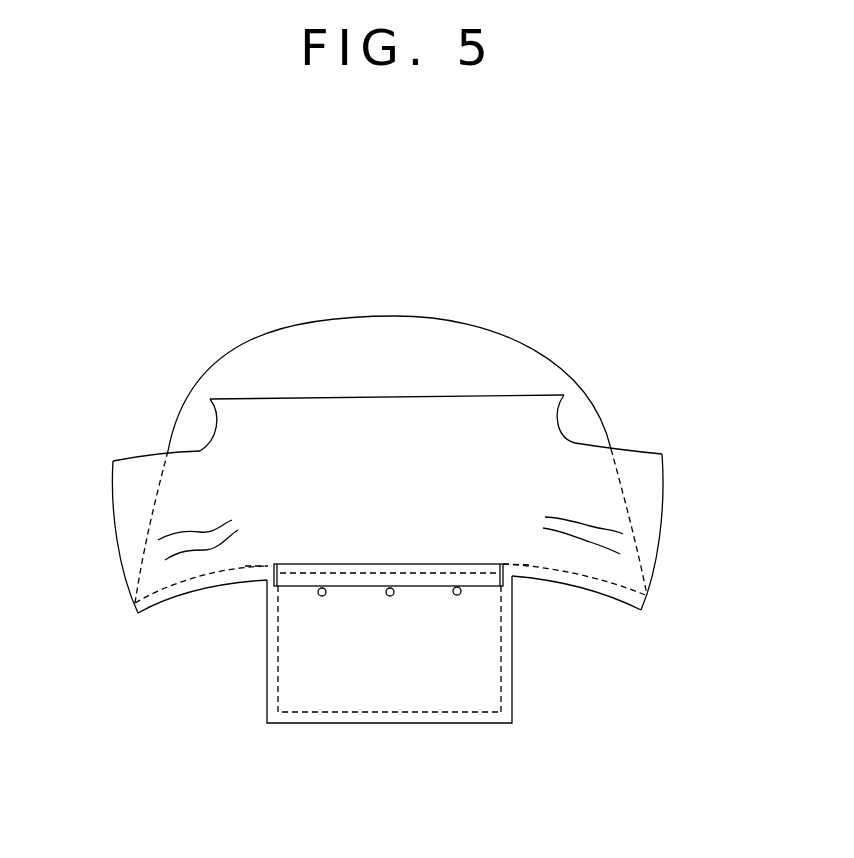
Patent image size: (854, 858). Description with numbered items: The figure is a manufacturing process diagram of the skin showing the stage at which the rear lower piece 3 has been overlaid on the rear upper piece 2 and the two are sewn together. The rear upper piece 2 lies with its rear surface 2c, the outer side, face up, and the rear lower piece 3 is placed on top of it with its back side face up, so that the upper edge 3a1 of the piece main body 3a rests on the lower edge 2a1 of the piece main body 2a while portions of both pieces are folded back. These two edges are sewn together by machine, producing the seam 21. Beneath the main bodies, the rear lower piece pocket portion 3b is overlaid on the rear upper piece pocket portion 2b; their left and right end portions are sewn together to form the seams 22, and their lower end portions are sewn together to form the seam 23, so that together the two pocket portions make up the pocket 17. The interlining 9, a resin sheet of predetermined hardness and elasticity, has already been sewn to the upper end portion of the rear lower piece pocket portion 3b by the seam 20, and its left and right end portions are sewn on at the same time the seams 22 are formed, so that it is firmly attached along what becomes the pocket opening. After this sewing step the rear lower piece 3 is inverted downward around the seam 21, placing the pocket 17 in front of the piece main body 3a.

The rear upper piece 2 is at (262, 327).
The piece main body 2a is at (545, 350).
The rear surface 2c is at (463, 350).
The lower edge 2a1 is at (170, 593).
The rear upper piece pocket portion 2b is at (340, 698).
The rear lower piece 3 is at (110, 505).
The piece main body 3a is at (672, 502).
The upper edge 3a1 is at (218, 575).
The rear lower piece pocket portion 3b is at (447, 695).
The interlining 9 is at (407, 580).
The pocket 17 is at (260, 705).
The seam 20 is at (362, 572).
The seam 21 is at (255, 567).
The seams 22 is at (278, 642).
The seam 23 is at (393, 710).